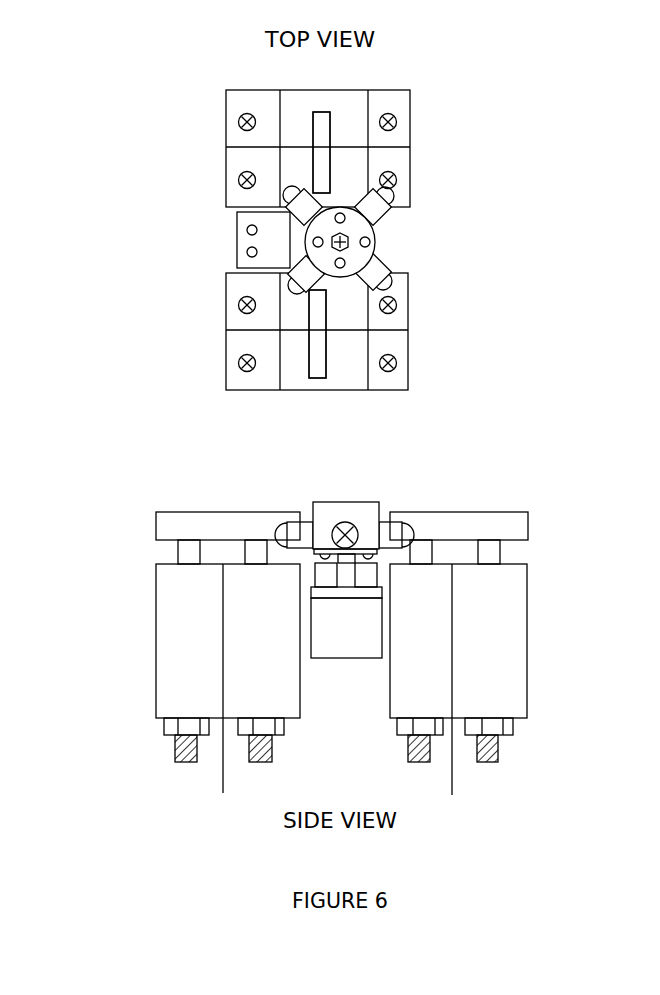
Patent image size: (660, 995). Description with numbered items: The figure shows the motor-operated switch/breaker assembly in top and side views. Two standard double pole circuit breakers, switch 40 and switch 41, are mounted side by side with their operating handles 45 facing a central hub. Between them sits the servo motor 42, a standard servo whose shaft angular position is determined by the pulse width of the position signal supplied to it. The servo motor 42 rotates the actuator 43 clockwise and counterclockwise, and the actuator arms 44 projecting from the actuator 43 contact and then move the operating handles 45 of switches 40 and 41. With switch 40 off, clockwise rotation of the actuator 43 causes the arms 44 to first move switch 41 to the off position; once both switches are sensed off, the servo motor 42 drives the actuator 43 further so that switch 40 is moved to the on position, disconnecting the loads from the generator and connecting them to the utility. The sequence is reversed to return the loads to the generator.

The switch 40 is at (422, 140).
The switch 41 is at (425, 330).
The servo motor 42 is at (223, 250).
The actuator 43 is at (375, 238).
The actuator arms 44 is at (292, 258).
The operating handles 45 is at (303, 133).